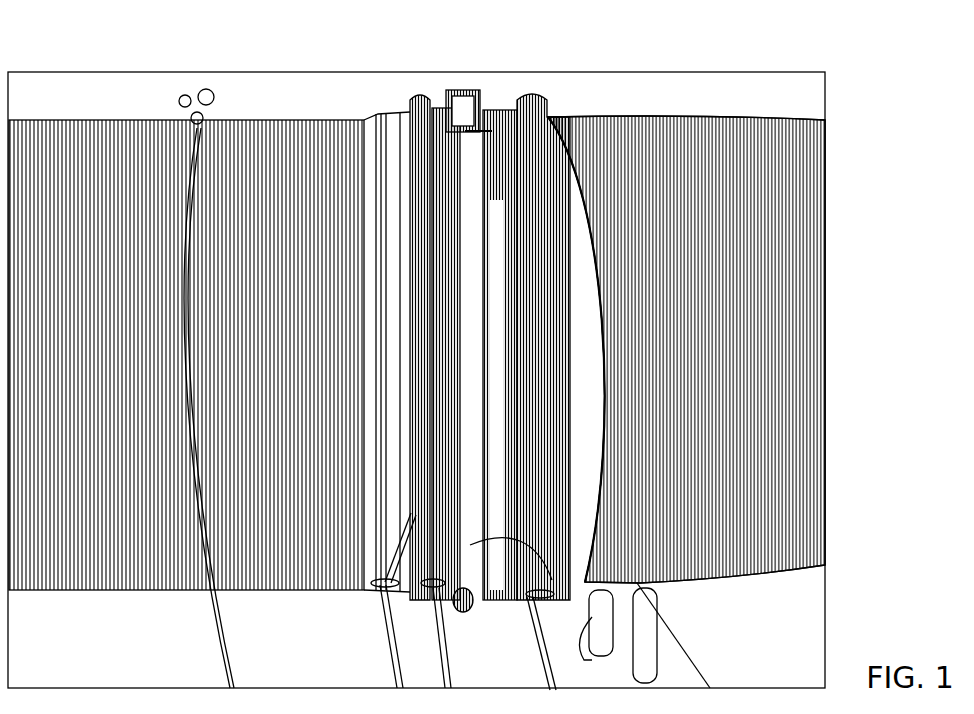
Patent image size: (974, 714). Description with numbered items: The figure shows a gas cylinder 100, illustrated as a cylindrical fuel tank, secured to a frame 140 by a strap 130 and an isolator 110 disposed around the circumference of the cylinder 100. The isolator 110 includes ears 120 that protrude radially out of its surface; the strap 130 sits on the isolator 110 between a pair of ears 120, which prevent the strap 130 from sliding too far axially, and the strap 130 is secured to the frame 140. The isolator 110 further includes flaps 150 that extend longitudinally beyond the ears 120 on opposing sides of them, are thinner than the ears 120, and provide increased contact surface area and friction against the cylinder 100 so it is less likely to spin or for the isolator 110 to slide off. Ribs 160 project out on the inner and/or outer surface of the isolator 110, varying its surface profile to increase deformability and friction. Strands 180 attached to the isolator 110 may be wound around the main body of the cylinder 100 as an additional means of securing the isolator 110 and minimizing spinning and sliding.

The cylinder 100 is at (72, 547).
The isolator 110 is at (362, 197).
The ears 120 is at (420, 288).
The strap 130 is at (517, 110).
The frame 140 is at (408, 640).
The flaps 150 is at (362, 448).
The ribs 160 is at (486, 118).
The strands 180 is at (453, 688).